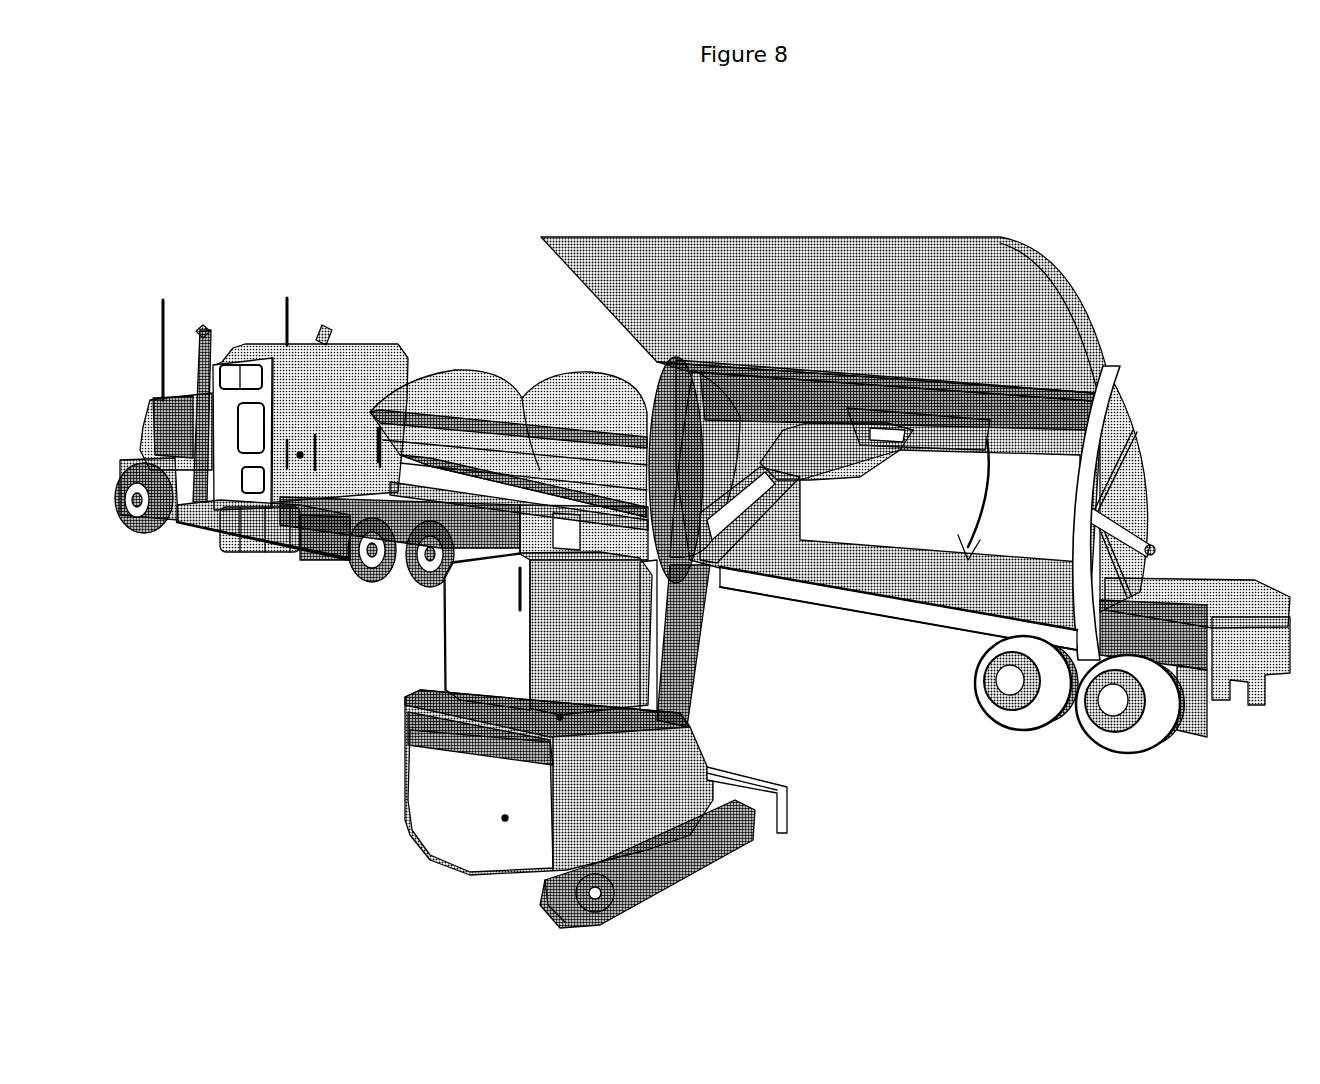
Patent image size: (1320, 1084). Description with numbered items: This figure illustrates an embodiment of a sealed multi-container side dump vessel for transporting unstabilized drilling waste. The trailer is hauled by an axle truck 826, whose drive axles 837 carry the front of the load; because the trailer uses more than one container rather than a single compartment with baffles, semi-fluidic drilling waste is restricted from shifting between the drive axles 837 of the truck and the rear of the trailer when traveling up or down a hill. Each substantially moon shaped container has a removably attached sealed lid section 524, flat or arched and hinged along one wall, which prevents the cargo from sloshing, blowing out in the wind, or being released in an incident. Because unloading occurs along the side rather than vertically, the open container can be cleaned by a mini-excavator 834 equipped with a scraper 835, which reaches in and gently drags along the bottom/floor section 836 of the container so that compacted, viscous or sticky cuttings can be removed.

The sealed lid section 524 is at (720, 293).
The axle truck 826 is at (237, 548).
The mini-excavator 834 is at (453, 832).
The scraper 835 is at (932, 450).
The bottom/floor section 836 is at (860, 530).
The drive axles 837 is at (437, 622).